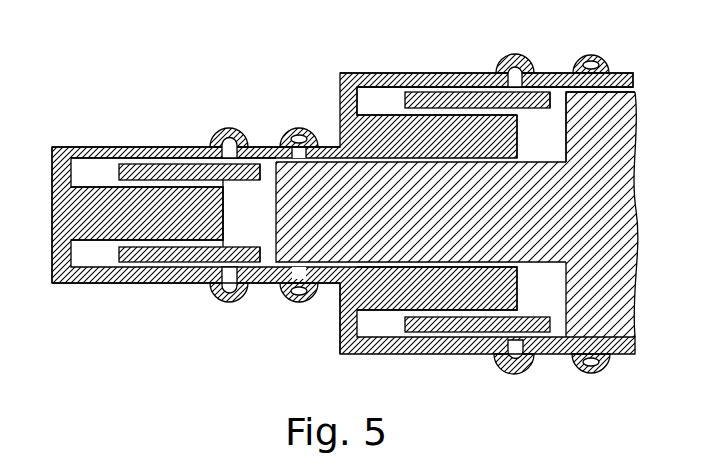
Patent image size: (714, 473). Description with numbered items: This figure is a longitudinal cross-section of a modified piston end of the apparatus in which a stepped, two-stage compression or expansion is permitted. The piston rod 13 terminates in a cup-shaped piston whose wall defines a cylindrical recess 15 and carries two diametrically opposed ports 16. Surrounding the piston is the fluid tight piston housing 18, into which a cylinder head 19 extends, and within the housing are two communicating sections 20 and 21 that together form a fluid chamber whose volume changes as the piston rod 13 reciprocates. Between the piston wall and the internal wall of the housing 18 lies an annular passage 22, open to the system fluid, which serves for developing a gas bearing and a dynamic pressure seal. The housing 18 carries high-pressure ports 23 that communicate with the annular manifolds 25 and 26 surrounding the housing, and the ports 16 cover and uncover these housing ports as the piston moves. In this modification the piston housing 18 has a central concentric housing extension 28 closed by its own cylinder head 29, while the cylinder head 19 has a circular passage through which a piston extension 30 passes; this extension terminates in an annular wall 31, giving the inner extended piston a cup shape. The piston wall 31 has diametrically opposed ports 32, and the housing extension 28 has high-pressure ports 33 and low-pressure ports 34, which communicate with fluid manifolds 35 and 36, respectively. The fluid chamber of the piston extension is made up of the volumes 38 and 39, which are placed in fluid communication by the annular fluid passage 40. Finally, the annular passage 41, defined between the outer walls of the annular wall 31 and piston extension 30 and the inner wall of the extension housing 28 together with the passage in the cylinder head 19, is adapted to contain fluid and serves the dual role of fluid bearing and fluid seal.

The piston rod 13 is at (622, 194).
The cylindrical recess 15 is at (414, 112).
The ports 16 is at (555, 100).
The piston housing 18 is at (435, 78).
The cylinder head 19 is at (354, 292).
The fluid chamber section 20 is at (556, 142).
The fluid chamber section 21 is at (391, 108).
The annular passage 22 is at (463, 90).
The high-pressure ports 23 is at (518, 80).
The annular manifold 25 is at (509, 60).
The annular manifold 26 is at (588, 63).
The housing extension 28 is at (76, 148).
The cylinder head 29 is at (60, 207).
The piston extension 30 is at (450, 218).
The annular wall 31 is at (148, 258).
The ports 32 is at (268, 250).
The high-pressure ports 33 is at (229, 149).
The low-pressure ports 34 is at (315, 146).
The fluid manifold 35 is at (233, 139).
The fluid manifold 36 is at (299, 138).
The volume 38 is at (260, 223).
The volume 39 is at (102, 180).
The annular fluid passage 40 is at (157, 189).
The annular passage 41 is at (180, 264).